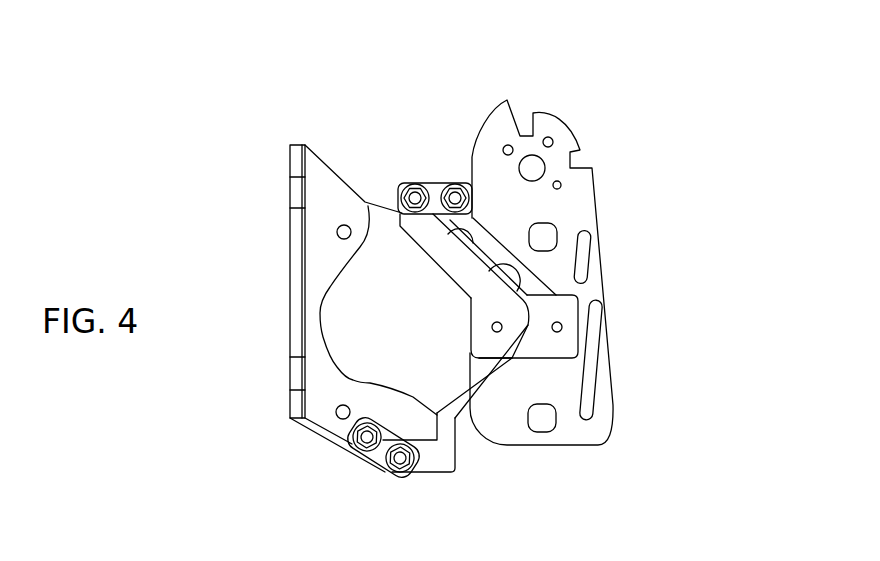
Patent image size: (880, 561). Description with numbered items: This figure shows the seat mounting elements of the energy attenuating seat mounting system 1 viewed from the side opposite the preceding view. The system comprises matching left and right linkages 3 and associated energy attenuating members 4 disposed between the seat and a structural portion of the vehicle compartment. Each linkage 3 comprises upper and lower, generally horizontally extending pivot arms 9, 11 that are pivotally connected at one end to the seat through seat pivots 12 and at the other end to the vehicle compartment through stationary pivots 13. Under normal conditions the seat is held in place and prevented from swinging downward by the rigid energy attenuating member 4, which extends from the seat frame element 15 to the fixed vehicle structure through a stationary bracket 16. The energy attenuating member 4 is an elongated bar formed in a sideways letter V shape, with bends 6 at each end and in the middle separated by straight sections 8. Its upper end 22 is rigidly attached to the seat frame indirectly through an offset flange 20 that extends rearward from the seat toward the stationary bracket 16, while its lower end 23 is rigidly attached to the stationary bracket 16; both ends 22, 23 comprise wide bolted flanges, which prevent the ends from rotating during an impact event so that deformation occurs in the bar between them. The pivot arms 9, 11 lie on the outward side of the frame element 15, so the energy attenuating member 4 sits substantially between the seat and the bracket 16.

The energy attenuating seat mounting system 1 is at (147, 232).
The linkage 3 is at (462, 95).
The energy attenuating member 4 is at (529, 351).
The bends 6 is at (443, 240).
The straight sections 8 is at (490, 370).
The upper pivot arm 9 is at (315, 309).
The lower pivot arm 11 is at (413, 397).
The seat pivot 12 is at (543, 232).
The stationary pivot 13 is at (337, 232).
The seat frame element 15 is at (578, 310).
The stationary bracket 16 is at (290, 312).
The offset flange 20 is at (533, 282).
The upper end 22 is at (437, 185).
The lower end 23 is at (433, 475).